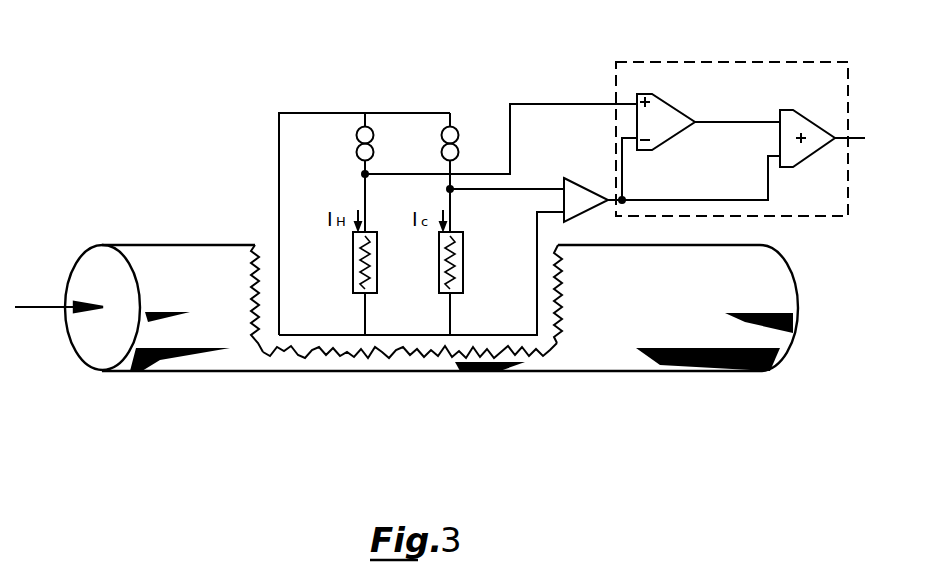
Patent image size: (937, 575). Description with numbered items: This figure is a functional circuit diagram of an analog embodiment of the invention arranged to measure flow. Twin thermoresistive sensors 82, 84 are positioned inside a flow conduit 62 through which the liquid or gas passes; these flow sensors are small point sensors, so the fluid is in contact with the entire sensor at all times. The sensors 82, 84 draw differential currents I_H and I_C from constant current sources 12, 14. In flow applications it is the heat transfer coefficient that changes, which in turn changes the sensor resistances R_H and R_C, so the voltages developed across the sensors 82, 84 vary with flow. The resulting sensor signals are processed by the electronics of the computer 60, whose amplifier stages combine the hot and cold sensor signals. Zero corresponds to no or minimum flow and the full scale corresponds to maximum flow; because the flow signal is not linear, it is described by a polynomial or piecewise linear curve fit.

The flow conduit 62 is at (185, 245).
The constant current source 12 is at (356, 142).
The constant current source 14 is at (459, 142).
The thermoresistive sensor 82 is at (381, 272).
The thermoresistive sensor 84 is at (466, 272).
The computer 60 is at (826, 62).